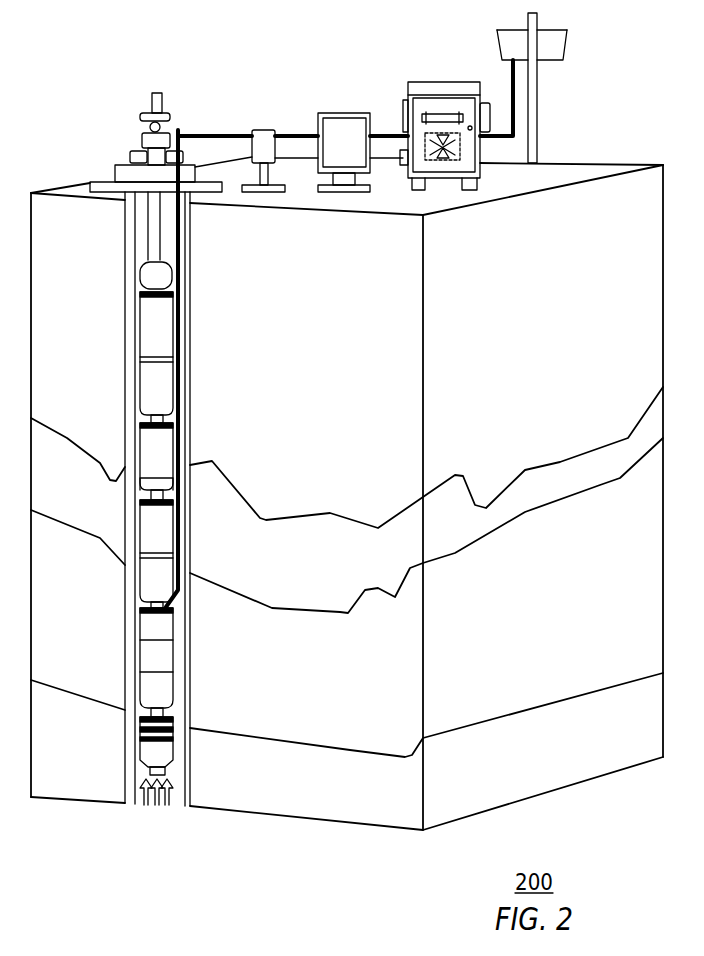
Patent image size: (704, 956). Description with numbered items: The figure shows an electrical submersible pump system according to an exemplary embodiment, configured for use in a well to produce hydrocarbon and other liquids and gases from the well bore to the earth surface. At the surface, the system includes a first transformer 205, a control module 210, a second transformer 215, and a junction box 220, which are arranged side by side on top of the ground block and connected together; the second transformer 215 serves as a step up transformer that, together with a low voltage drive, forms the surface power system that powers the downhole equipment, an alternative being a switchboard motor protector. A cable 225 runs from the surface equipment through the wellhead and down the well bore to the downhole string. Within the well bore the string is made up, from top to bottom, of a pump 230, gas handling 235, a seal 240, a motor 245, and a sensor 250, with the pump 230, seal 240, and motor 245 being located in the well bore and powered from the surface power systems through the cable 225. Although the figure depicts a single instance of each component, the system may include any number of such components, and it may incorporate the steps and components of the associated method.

The first transformer 205 is at (552, 50).
The control module 210 is at (445, 108).
The second transformer 215 is at (345, 122).
The junction box 220 is at (263, 136).
The cable 225 is at (178, 130).
The pump 230 is at (145, 341).
The gas handling 235 is at (155, 450).
The seal 240 is at (155, 540).
The motor 245 is at (155, 657).
The sensor 250 is at (170, 760).